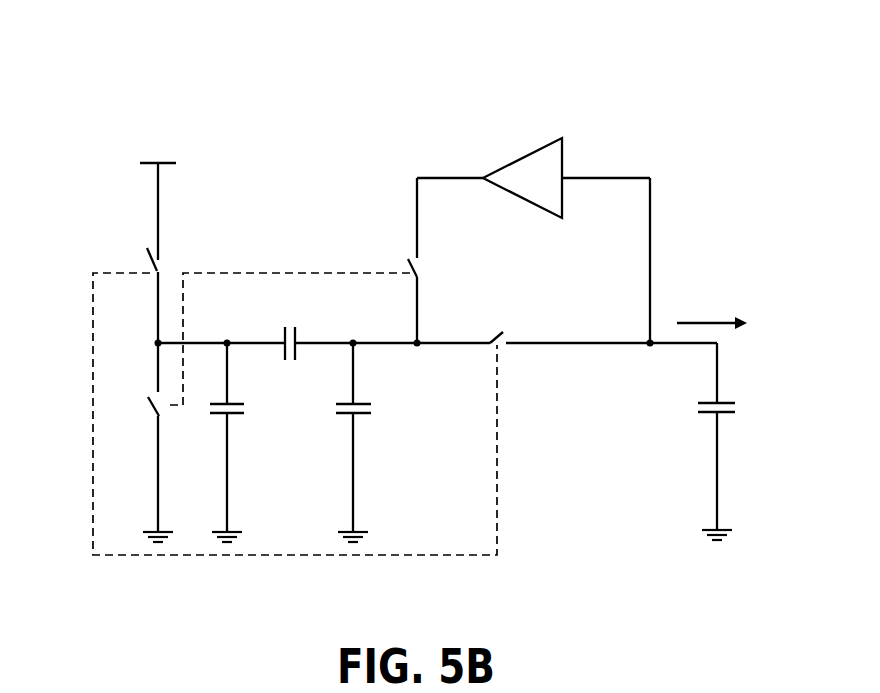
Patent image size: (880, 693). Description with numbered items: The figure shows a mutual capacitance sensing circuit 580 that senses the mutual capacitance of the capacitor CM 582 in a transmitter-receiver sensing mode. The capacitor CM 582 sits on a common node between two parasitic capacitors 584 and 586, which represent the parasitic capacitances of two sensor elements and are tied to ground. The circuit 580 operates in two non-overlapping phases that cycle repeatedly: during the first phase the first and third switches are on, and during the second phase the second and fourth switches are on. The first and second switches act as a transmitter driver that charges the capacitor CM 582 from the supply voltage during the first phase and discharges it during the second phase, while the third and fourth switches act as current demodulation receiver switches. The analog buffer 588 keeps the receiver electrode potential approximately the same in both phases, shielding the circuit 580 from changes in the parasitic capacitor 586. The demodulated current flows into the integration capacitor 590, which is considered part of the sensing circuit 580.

The mutual capacitance sensing circuit 580 is at (741, 99).
The capacitor CM 582 is at (313, 322).
The parasitic capacitor CP2 584 is at (243, 442).
The parasitic capacitor CP1 586 is at (339, 442).
The analog buffer 588 is at (540, 147).
The integration capacitor CINT 590 is at (742, 441).